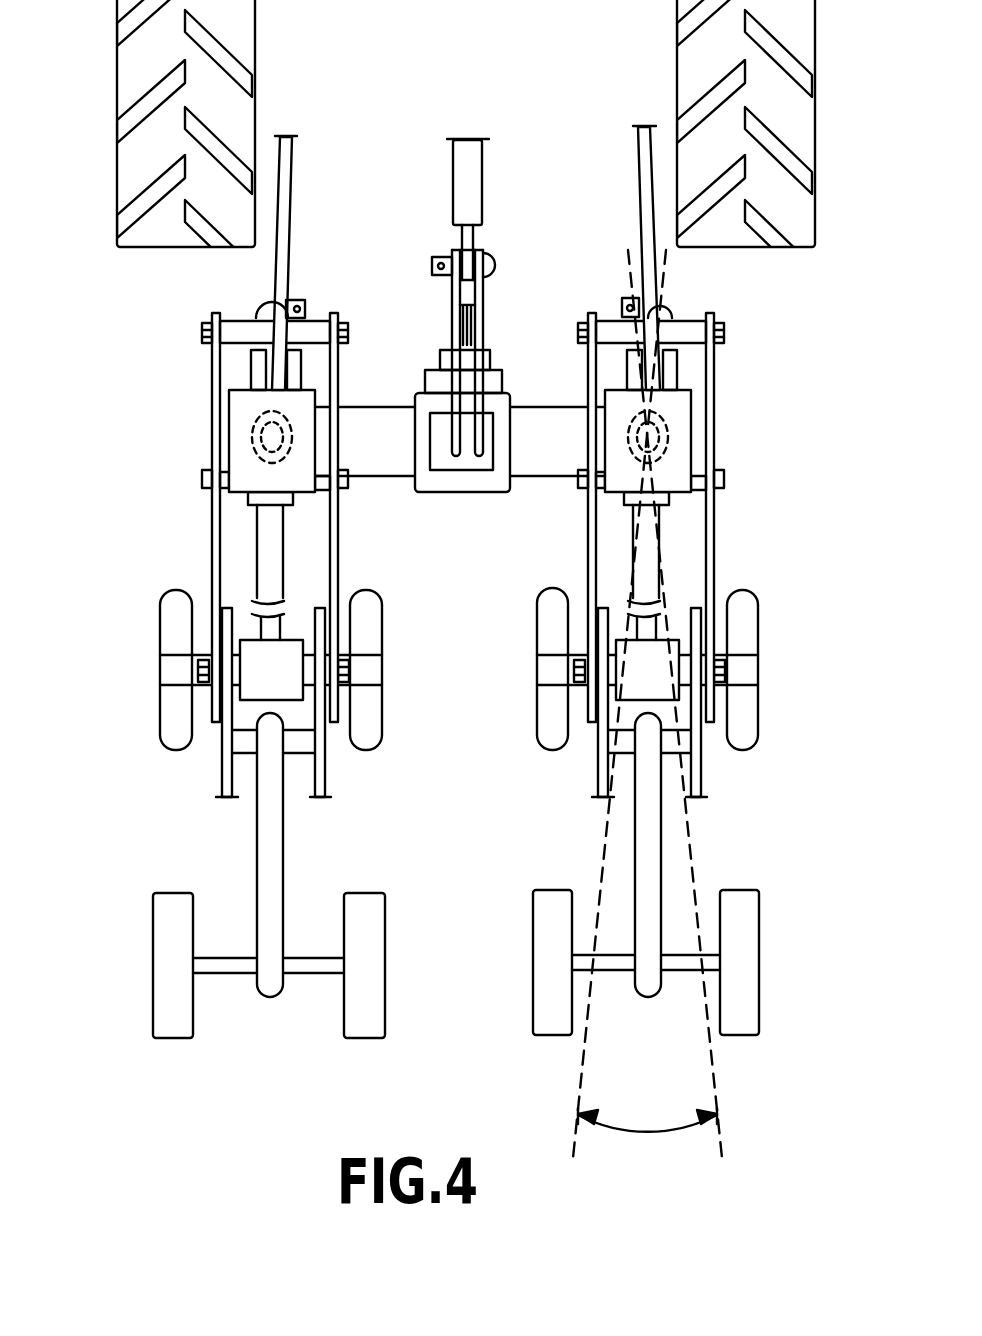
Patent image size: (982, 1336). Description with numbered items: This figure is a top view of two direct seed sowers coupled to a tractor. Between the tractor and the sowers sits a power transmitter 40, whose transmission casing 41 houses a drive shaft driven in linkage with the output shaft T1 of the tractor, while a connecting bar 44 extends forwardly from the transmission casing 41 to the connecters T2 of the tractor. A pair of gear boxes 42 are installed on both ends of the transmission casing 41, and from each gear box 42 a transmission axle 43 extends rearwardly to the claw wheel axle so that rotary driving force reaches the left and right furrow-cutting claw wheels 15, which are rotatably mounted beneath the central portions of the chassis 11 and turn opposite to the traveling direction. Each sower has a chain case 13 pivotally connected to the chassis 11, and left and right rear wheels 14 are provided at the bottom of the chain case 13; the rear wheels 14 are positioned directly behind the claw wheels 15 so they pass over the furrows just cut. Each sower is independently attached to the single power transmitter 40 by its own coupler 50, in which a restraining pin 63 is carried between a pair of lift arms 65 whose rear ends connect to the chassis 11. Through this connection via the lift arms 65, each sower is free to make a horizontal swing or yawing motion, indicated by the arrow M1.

The chassis 11 is at (606, 774).
The chain case 13 is at (655, 852).
The rear wheels 14 is at (160, 1016).
The furrow-cutting claw wheels 15 is at (150, 617).
The power transmitter 40 is at (471, 508).
The transmission casing 41 is at (536, 415).
The gear boxes 42 is at (233, 438).
The transmission axle 43 is at (265, 548).
The connecting bar 44 is at (268, 299).
The coupler 50 is at (463, 477).
The restraining pin 63 is at (316, 327).
The lift arms 65 is at (590, 518).
The output shaft T1 is at (478, 172).
The connecters T2 is at (296, 173).
The horizontal swing motion M1 is at (647, 715).